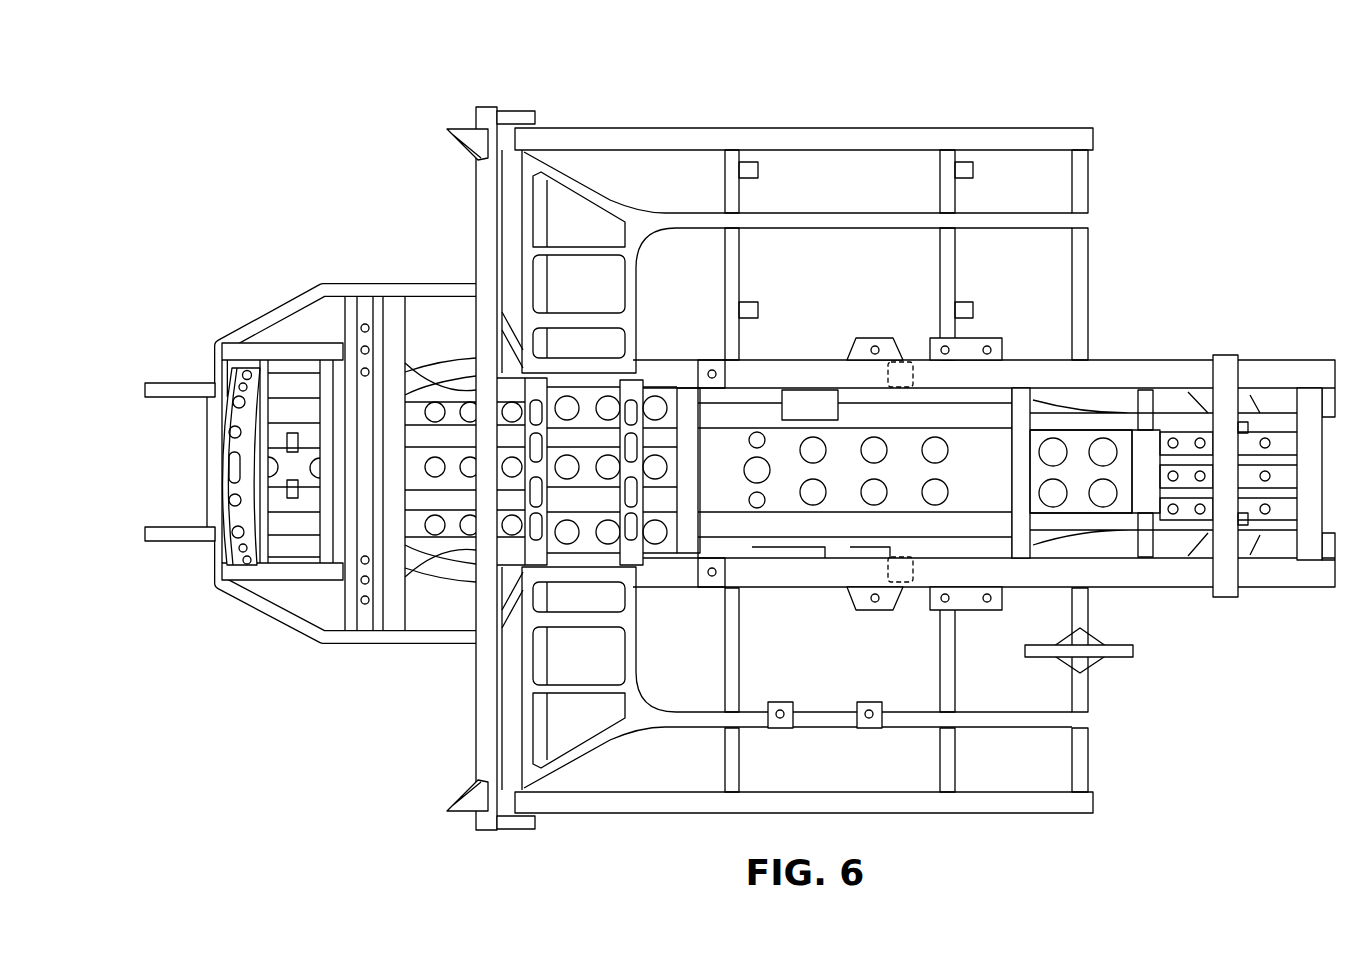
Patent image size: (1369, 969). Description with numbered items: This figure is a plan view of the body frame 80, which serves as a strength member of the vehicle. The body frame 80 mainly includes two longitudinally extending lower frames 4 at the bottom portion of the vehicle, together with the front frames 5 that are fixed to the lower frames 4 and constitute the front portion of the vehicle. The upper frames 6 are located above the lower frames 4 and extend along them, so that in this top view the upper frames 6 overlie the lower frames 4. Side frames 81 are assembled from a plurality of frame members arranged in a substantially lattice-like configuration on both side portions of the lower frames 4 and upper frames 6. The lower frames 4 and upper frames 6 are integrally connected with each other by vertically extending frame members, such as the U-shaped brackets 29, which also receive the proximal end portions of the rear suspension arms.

The body frame 80 is at (1186, 128).
The side frames 81 is at (641, 140).
The front frames 5 is at (284, 310).
The lower frames 4 is at (206, 384).
The U-shaped brackets 29 is at (1140, 360).
The upper frames 6 is at (1264, 370).